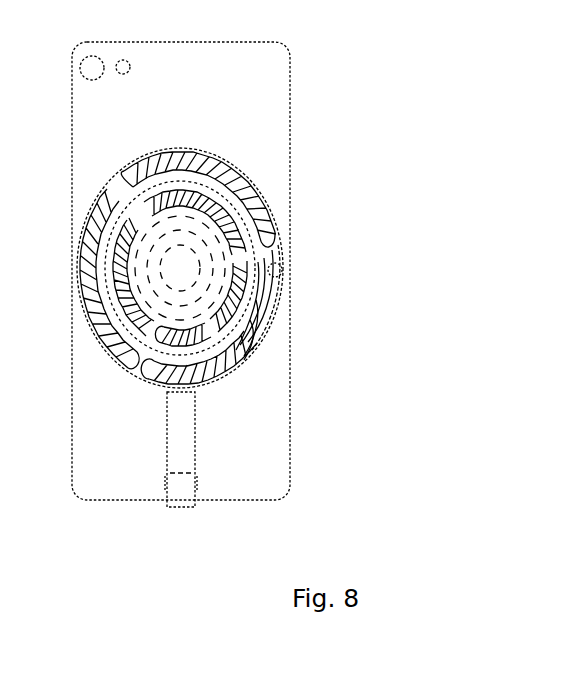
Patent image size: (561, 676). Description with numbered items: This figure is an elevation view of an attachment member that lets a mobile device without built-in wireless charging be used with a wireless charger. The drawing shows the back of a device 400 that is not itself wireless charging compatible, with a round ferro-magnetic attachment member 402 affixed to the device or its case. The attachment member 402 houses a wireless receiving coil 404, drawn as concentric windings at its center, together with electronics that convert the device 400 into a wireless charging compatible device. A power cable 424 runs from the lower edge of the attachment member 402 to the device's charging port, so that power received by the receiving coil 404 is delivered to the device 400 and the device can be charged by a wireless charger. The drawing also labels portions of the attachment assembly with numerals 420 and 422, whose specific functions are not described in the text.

The device 400 is at (262, 118).
The ferro-magnetic attachment member 402 is at (235, 238).
The wireless receiving coil 404 is at (213, 276).
The wireless charging module 420 is at (237, 372).
The shield region 422 is at (250, 342).
The power cable 424 is at (183, 423).